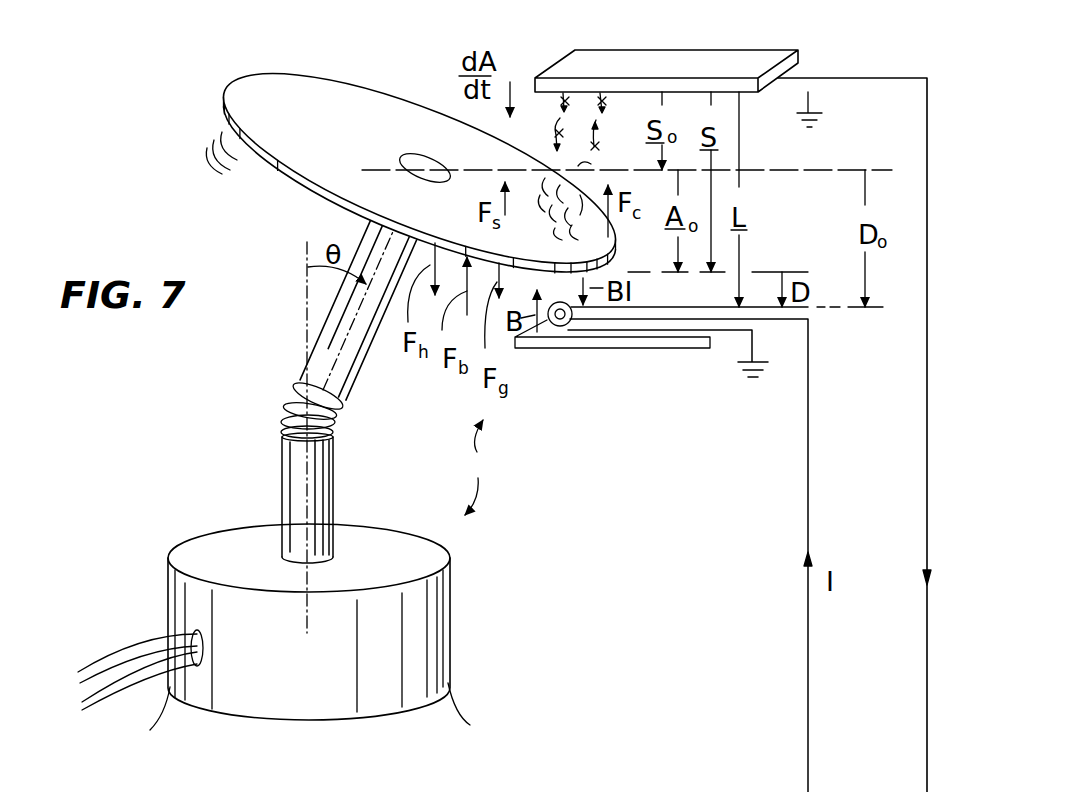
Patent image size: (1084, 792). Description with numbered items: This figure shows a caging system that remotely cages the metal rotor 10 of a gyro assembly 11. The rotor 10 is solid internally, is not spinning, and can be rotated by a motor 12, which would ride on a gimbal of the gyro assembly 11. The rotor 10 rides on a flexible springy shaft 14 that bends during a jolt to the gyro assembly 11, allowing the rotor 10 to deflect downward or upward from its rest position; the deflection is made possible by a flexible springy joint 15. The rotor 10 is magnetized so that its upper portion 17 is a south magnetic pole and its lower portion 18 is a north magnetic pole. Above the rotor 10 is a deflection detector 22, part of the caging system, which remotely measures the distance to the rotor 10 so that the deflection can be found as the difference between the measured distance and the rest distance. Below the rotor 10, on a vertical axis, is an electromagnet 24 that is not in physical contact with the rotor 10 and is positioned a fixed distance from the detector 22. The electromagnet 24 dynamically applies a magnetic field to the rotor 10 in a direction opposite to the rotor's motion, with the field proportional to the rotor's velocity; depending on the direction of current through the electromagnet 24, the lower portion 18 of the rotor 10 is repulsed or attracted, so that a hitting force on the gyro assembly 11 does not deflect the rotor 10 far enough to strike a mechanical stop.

The metal rotor 10 is at (259, 80).
The upper portion 17 is at (358, 92).
The lower portion 18 is at (293, 170).
The deflection detector 22 is at (683, 57).
The electromagnet 24 is at (565, 328).
The flexible springy joint 15 is at (288, 412).
The flexible springy shaft 14 is at (292, 492).
The motor 12 is at (440, 648).
The gyro assembly 11 is at (487, 467).